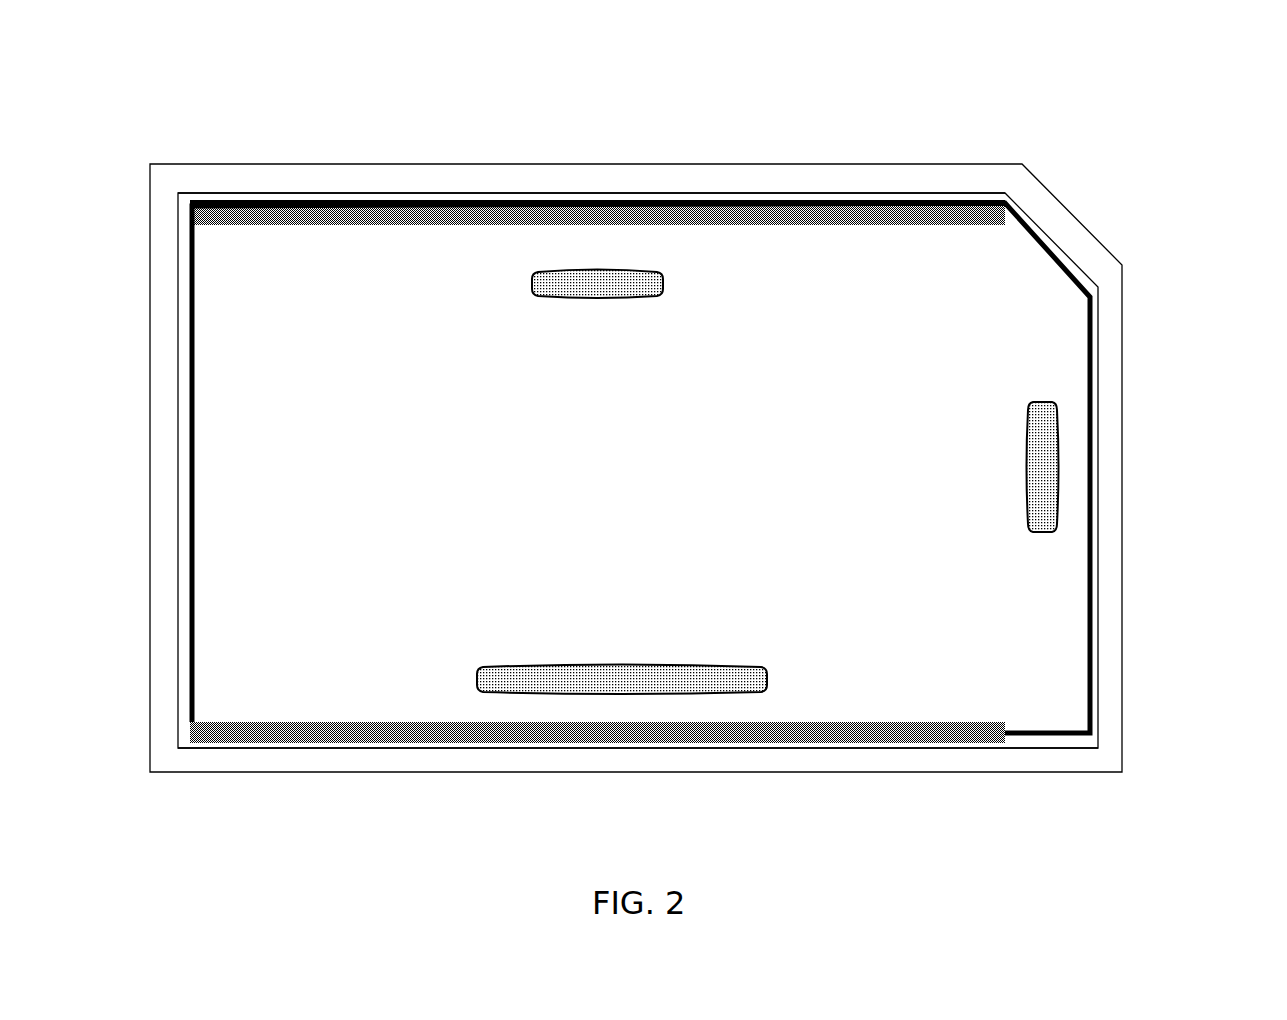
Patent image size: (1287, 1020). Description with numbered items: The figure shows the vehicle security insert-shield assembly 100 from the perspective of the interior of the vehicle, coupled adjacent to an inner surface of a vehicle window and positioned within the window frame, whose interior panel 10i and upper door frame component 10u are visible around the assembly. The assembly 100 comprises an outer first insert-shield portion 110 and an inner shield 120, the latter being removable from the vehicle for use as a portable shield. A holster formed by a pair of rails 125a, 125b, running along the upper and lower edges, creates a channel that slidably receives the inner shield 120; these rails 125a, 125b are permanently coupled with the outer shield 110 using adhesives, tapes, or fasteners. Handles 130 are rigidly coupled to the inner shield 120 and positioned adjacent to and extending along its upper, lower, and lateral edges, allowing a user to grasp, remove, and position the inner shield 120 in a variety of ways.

The vehicle security insert-shield assembly 100 is at (1035, 95).
The first insert-shield portion 110 is at (1075, 740).
The upper door frame component 10u is at (972, 178).
The interior panel 10i is at (883, 762).
The inner shield 120 is at (877, 618).
The rail 125a is at (300, 745).
The rail 125b is at (347, 202).
The handle 130 is at (601, 275).